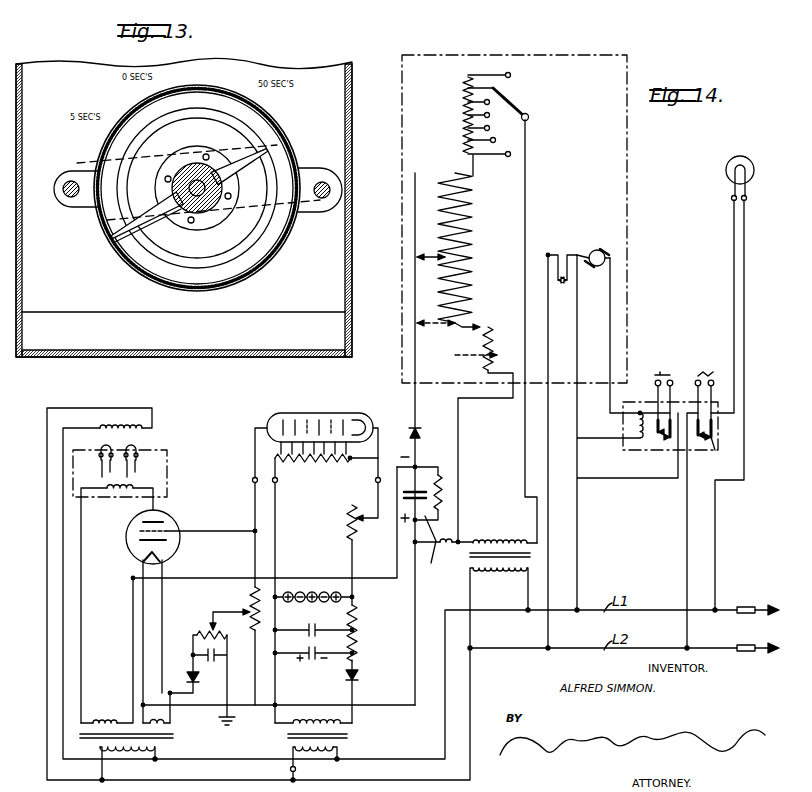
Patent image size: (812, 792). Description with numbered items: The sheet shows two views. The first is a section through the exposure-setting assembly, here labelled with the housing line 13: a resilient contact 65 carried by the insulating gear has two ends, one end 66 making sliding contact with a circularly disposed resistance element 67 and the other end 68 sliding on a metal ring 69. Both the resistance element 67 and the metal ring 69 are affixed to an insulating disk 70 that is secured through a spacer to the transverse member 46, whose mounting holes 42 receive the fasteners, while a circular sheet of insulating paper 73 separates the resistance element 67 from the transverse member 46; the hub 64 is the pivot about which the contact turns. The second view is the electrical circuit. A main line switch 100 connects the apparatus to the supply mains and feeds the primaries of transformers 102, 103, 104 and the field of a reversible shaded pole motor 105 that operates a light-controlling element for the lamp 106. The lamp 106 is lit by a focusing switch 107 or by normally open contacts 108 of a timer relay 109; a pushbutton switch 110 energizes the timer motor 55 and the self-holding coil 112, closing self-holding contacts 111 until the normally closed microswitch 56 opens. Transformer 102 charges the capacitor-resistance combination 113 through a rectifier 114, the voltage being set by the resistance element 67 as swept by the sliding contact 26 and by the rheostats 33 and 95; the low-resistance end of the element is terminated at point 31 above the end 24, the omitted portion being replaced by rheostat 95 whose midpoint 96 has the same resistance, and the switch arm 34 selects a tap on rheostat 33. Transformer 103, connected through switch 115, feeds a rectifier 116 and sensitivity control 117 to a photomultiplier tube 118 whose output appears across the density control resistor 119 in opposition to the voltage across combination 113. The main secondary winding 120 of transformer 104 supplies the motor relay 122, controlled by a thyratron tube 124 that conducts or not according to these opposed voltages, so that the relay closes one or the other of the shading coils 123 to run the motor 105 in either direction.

In FIG. 13, the sectional view line 13 is at (352, 90).
In FIG. 13, the mounting holes 42 is at (62, 200).
In FIG. 13, the transverse member 46 is at (88, 165).
In FIG. 13, the hub 64 is at (165, 212).
In FIG. 13, the resilient contact 65 is at (225, 207).
In FIG. 13, the sliding contact end 66 is at (115, 232).
In FIG. 13, the resistance element 67 is at (240, 284).
In FIG. 14, the resistance element 67 is at (462, 252).
In FIG. 13, the metal ring contact end 68 is at (235, 170).
In FIG. 13, the metal ring 69 is at (245, 137).
In FIG. 13, the insulating disk 70 is at (250, 258).
In FIG. 13, the insulating paper sheet 73 is at (196, 300).
In FIG. 14, the end of resistance element 24 is at (460, 353).
In FIG. 14, the sliding contact 26 is at (426, 255).
In FIG. 14, the termination point 31 is at (448, 327).
In FIG. 14, the rheostat 33 is at (463, 113).
In FIG. 14, the switch arm 34 is at (518, 95).
In FIG. 14, the timer motor 55 is at (594, 250).
In FIG. 14, the microswitch 56 is at (562, 283).
In FIG. 14, the adjustable rheostat 95 is at (492, 325).
In FIG. 14, the rheostat midpoint 96 is at (496, 345).
In FIG. 14, the main line switch 100 is at (748, 605).
In FIG. 14, the transformer 102 is at (530, 555).
In FIG. 14, the transformer 103 is at (350, 740).
In FIG. 14, the transformer 104 is at (175, 741).
In FIG. 14, the shaded pole motor 105 is at (153, 426).
In FIG. 14, the electric lamp 106 is at (726, 166).
In FIG. 14, the focusing switch 107 is at (703, 374).
In FIG. 14, the normally open contacts 108 is at (697, 447).
In FIG. 14, the timer relay 109 is at (658, 445).
In FIG. 14, the pushbutton switch 110 is at (660, 372).
In FIG. 14, the self-holding contacts 111 is at (672, 445).
In FIG. 14, the self-holding coil 112 is at (643, 447).
In FIG. 14, the capacitor-resistance combination 113 is at (444, 551).
In FIG. 14, the rectifier 114 is at (420, 432).
In FIG. 14, the switch 115 is at (300, 770).
In FIG. 14, the rectifier 116 is at (358, 676).
In FIG. 14, the sensitivity control 117 is at (346, 528).
In FIG. 14, the photomultiplier tube 118 is at (300, 412).
In FIG. 14, the density control resistor 119 is at (250, 605).
In FIG. 14, the main secondary winding 120 is at (118, 720).
In FIG. 14, the motor relay 122 is at (168, 491).
In FIG. 14, the shading coils 123 is at (140, 442).
In FIG. 14, the thyratron tube 124 is at (128, 538).